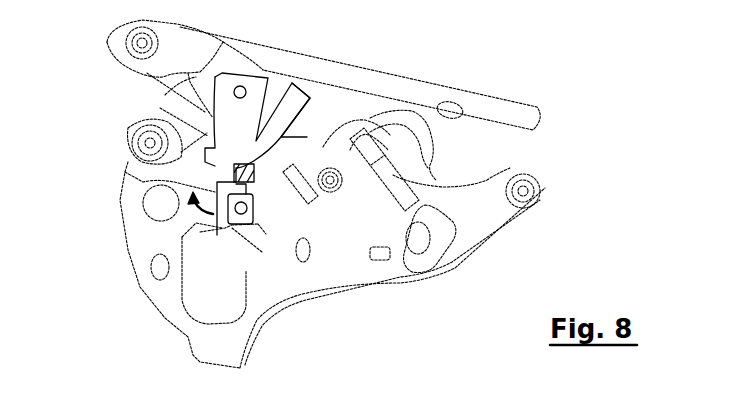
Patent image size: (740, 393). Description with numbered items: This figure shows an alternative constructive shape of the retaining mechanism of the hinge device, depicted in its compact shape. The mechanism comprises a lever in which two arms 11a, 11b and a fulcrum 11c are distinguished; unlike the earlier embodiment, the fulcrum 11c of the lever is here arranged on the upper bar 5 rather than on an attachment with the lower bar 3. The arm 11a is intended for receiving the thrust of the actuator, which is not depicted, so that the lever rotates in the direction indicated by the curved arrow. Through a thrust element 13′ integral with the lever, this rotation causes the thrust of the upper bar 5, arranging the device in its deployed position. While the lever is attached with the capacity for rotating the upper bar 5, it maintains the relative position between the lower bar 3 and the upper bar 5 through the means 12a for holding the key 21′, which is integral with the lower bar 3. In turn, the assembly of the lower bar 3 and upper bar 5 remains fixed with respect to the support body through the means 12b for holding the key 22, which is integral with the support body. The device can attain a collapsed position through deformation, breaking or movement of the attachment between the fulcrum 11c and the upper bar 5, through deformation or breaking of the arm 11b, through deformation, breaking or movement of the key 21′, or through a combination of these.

The lower bar 3 is at (290, 180).
The upper bar 5 is at (382, 108).
The arm 11a is at (305, 137).
The arm 11b is at (213, 113).
The fulcrum 11c is at (242, 88).
The means for holding the key 21′ 12a is at (243, 196).
The means for holding the key 22 12b is at (257, 221).
The thrust element 13′ is at (160, 108).
The key 21′ is at (234, 173).
The key 22 is at (240, 188).